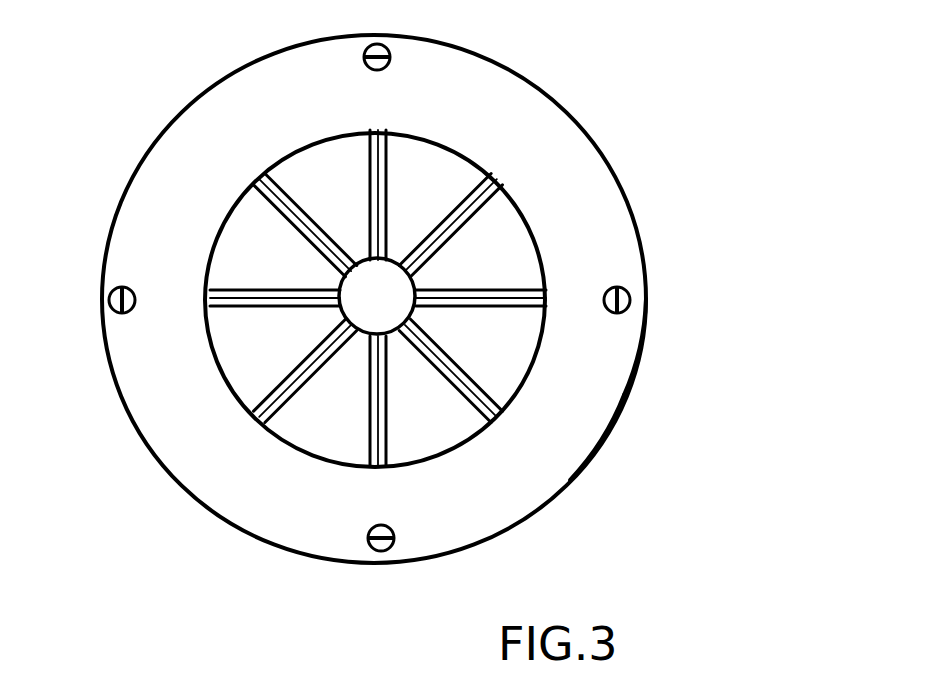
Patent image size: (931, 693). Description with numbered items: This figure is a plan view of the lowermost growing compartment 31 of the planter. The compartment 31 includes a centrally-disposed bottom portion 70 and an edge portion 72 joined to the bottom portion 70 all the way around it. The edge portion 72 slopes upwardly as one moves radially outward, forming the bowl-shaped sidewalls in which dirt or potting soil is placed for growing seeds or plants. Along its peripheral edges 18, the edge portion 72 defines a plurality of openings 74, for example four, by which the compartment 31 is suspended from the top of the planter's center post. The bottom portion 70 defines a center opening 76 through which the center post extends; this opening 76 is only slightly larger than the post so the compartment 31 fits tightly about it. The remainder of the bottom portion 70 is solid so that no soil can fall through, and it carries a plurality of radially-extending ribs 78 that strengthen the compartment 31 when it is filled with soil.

The peripheral edges 18 is at (600, 457).
The lowermost growing compartment 31 is at (640, 378).
The bottom portion 70 is at (447, 187).
The edge portion 72 is at (542, 183).
The openings 74 is at (366, 52).
The center opening 76 is at (369, 312).
The radially-extending ribs 78 is at (370, 178).